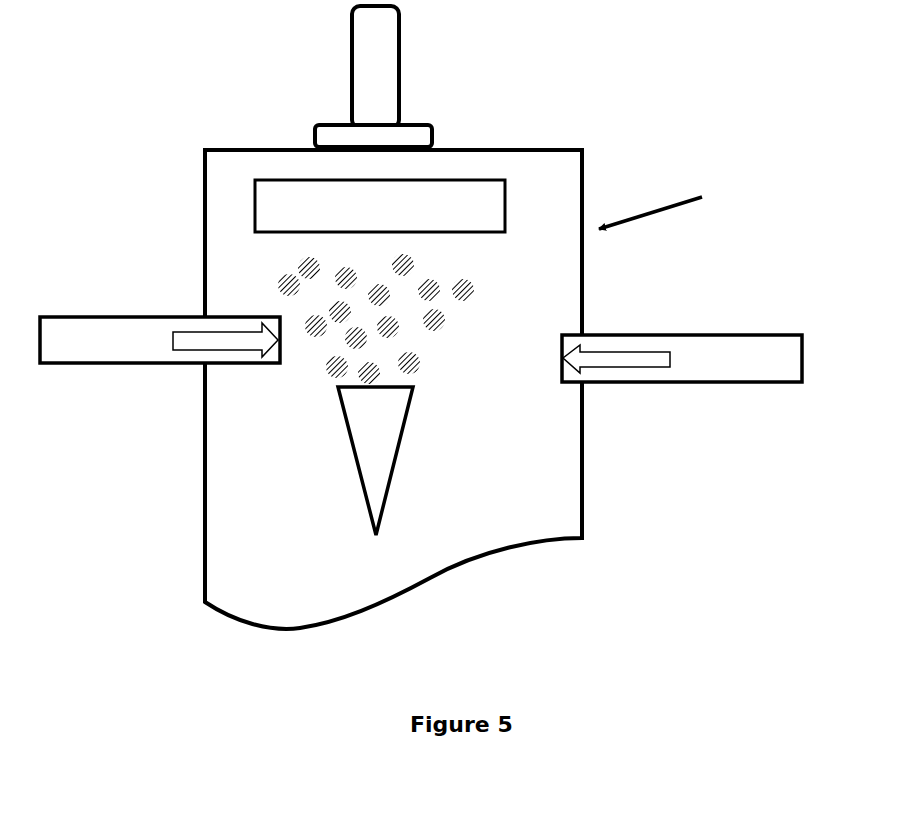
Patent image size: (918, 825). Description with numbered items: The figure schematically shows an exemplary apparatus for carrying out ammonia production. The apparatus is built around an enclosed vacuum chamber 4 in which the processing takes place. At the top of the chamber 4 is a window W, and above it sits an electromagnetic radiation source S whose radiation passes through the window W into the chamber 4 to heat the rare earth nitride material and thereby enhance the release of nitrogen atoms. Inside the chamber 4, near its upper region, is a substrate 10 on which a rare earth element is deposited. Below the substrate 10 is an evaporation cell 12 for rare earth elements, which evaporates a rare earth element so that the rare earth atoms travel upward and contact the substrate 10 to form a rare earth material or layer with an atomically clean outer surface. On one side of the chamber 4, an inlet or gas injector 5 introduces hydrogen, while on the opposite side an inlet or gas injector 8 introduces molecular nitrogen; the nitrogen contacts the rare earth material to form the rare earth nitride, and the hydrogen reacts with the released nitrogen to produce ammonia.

The chamber 4 is at (203, 459).
The electromagnetic radiation source S is at (400, 62).
The window W is at (432, 137).
The substrate 10 is at (380, 206).
The evaporation cell 12 is at (450, 461).
The inlet or gas injector 5 is at (160, 340).
The inlet or gas injector 8 is at (682, 358).